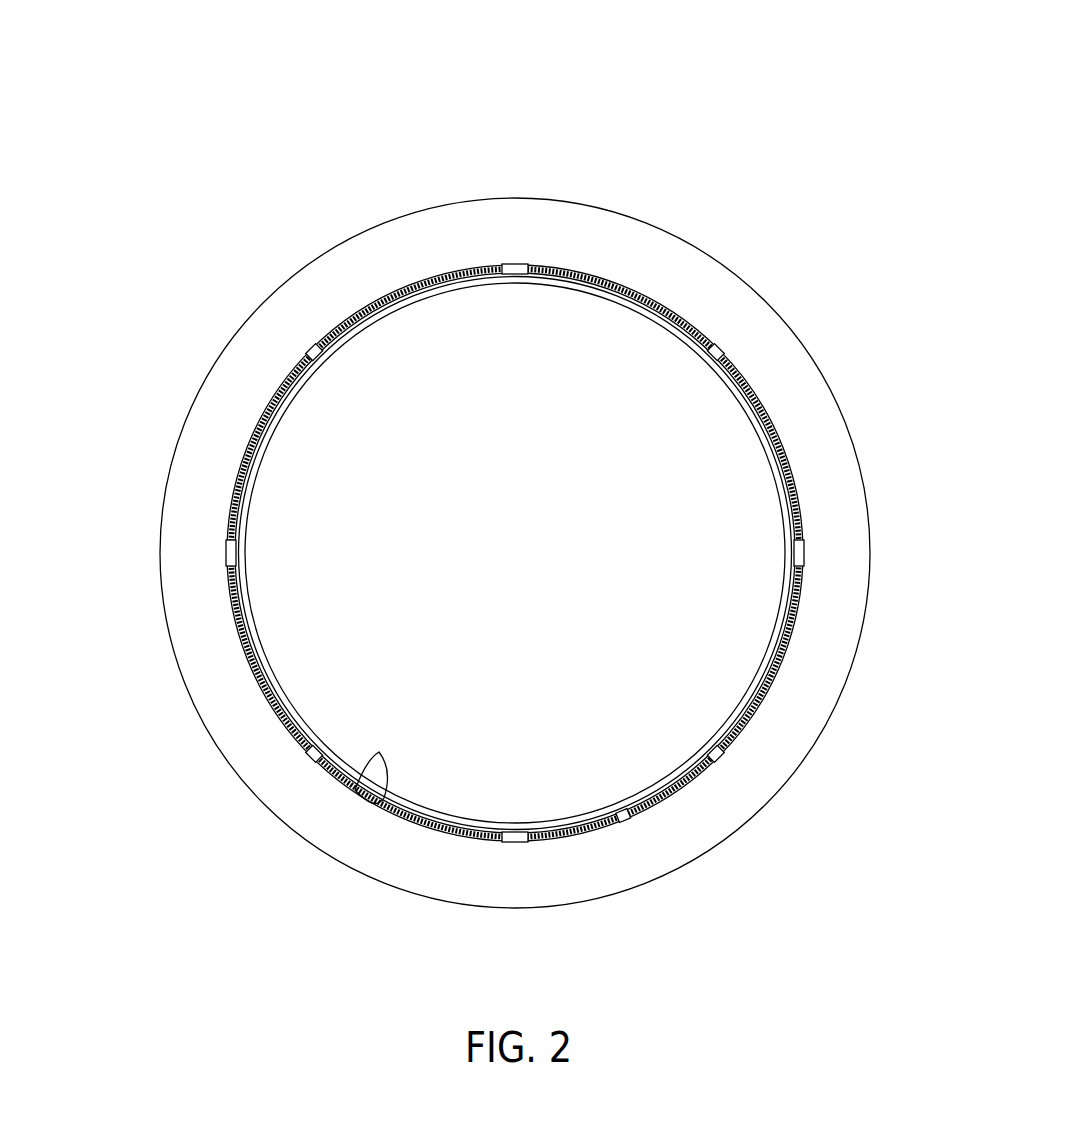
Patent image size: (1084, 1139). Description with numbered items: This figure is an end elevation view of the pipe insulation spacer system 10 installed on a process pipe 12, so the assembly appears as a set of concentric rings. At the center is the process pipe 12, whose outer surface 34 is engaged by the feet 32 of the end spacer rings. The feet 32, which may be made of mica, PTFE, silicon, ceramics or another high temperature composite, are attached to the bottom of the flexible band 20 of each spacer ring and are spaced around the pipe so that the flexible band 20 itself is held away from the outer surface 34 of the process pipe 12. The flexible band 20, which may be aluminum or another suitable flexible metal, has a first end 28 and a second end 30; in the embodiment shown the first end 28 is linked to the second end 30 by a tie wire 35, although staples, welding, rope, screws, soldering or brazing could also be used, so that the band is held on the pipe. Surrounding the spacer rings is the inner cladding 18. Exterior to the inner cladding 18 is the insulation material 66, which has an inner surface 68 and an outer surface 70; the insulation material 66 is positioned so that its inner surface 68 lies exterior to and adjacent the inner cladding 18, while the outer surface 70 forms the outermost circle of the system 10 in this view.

The pipe insulation spacer system 10 is at (768, 88).
The process pipe 12 is at (757, 422).
The inner cladding 18 is at (650, 297).
The flexible band 20 is at (355, 790).
The first end 28 is at (647, 813).
The second end 30 is at (617, 827).
The feet 32 is at (513, 265).
The outer surface 34 is at (787, 482).
The tie wire 35 is at (628, 818).
The insulation material 66 is at (405, 858).
The inner surface 68 is at (783, 670).
The outer surface 70 is at (163, 487).